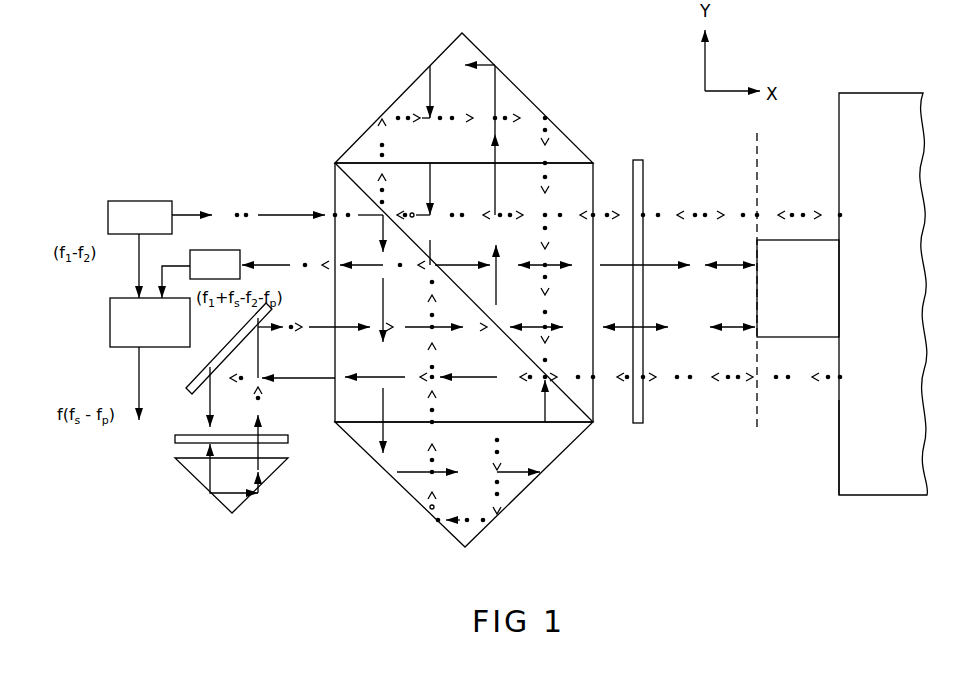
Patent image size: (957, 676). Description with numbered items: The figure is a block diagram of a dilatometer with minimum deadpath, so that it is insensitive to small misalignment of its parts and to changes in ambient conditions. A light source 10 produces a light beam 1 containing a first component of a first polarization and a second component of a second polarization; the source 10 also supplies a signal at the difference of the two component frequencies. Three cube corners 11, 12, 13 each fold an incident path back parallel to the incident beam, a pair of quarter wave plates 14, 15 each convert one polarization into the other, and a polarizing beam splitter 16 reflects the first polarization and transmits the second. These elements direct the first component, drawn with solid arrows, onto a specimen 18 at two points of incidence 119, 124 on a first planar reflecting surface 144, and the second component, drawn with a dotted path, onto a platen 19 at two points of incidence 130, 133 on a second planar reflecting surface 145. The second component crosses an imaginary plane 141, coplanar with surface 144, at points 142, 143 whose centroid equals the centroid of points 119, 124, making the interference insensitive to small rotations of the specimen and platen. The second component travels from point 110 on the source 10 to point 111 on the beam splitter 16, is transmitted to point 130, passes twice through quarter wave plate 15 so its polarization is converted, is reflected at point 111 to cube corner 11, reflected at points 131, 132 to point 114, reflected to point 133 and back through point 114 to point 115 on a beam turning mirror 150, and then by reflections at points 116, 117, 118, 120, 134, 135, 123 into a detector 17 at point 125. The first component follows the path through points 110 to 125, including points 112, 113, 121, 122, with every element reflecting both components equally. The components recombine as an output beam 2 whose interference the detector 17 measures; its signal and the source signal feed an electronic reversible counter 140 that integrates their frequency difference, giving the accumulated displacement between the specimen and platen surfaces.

The light beam 1 is at (240, 195).
The output beam 2 is at (306, 271).
The light source 10 is at (122, 211).
The cube corner 11 is at (410, 100).
The cube corner 12 is at (420, 485).
The cube corner 13 is at (286, 460).
The quarter wave plate 14 is at (285, 434).
The quarter wave plate 15 is at (645, 421).
The polarizing beam splitter 16 is at (336, 181).
The detector 17 is at (213, 262).
The specimen 18 is at (810, 303).
The platen 19 is at (898, 303).
The point on source 110 is at (210, 203).
The point on polarizing beam splitter 111 is at (371, 278).
The point of reflection 112 is at (363, 444).
The point of reflection 113 is at (531, 486).
The point on polarizing beam splitter 114 is at (470, 397).
The point on mirror 115 is at (193, 391).
The point of reflection 116 is at (221, 480).
The point of reflection 117 is at (282, 413).
The point of reflection 118 is at (229, 348).
The point of incidence 119 is at (758, 337).
The point of reflection 120 is at (534, 283).
The point of reflection 121 is at (494, 129).
The point of reflection 122 is at (412, 81).
The point of reflection 123 is at (415, 216).
The point of incidence 124 is at (756, 264).
The point on detector 125 is at (266, 255).
The point of incidence 130 is at (840, 213).
The point of reflection 131 is at (370, 151).
The point of reflection 132 is at (558, 238).
The point of incidence 133 is at (840, 373).
The point of reflection 134 is at (513, 488).
The point of reflection 135 is at (441, 409).
The electronic reversible counter 140 is at (120, 326).
The imaginary plane 141 is at (760, 141).
The crossing point 142 is at (752, 200).
The crossing point 143 is at (756, 377).
The first planar reflecting surface 144 is at (757, 296).
The second planar reflecting surface 145 is at (840, 443).
The mirror 150 is at (287, 319).